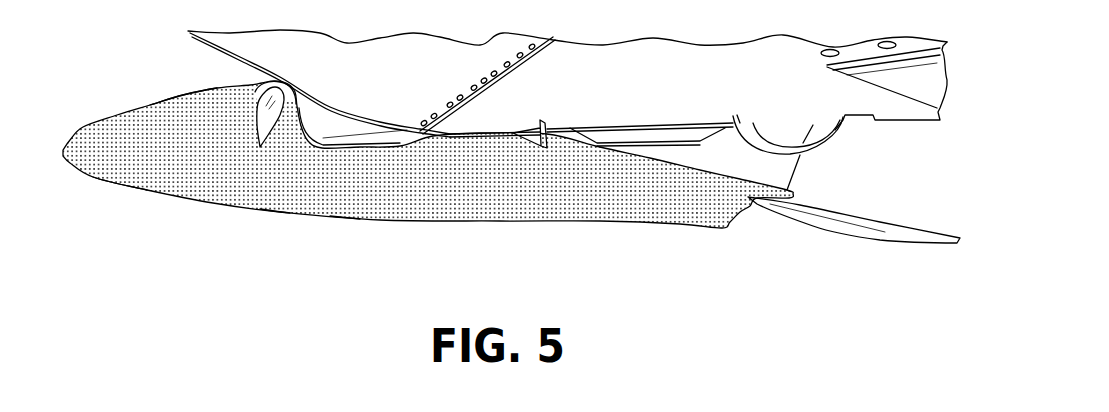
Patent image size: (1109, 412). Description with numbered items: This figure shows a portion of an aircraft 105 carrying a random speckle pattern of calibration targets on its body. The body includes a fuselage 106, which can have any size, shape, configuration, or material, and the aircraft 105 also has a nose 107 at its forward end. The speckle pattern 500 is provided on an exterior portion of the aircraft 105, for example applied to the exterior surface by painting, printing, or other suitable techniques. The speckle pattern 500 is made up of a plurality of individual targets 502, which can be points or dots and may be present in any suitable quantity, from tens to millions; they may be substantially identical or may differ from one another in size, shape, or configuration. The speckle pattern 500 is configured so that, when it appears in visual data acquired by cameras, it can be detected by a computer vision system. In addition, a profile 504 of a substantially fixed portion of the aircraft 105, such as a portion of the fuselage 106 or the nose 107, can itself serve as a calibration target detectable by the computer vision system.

The aircraft 105 is at (712, 258).
The fuselage 106 is at (566, 225).
The nose 107 is at (143, 187).
The speckle pattern 500 is at (287, 206).
The individual targets 502 is at (343, 205).
The profile 504 is at (172, 104).